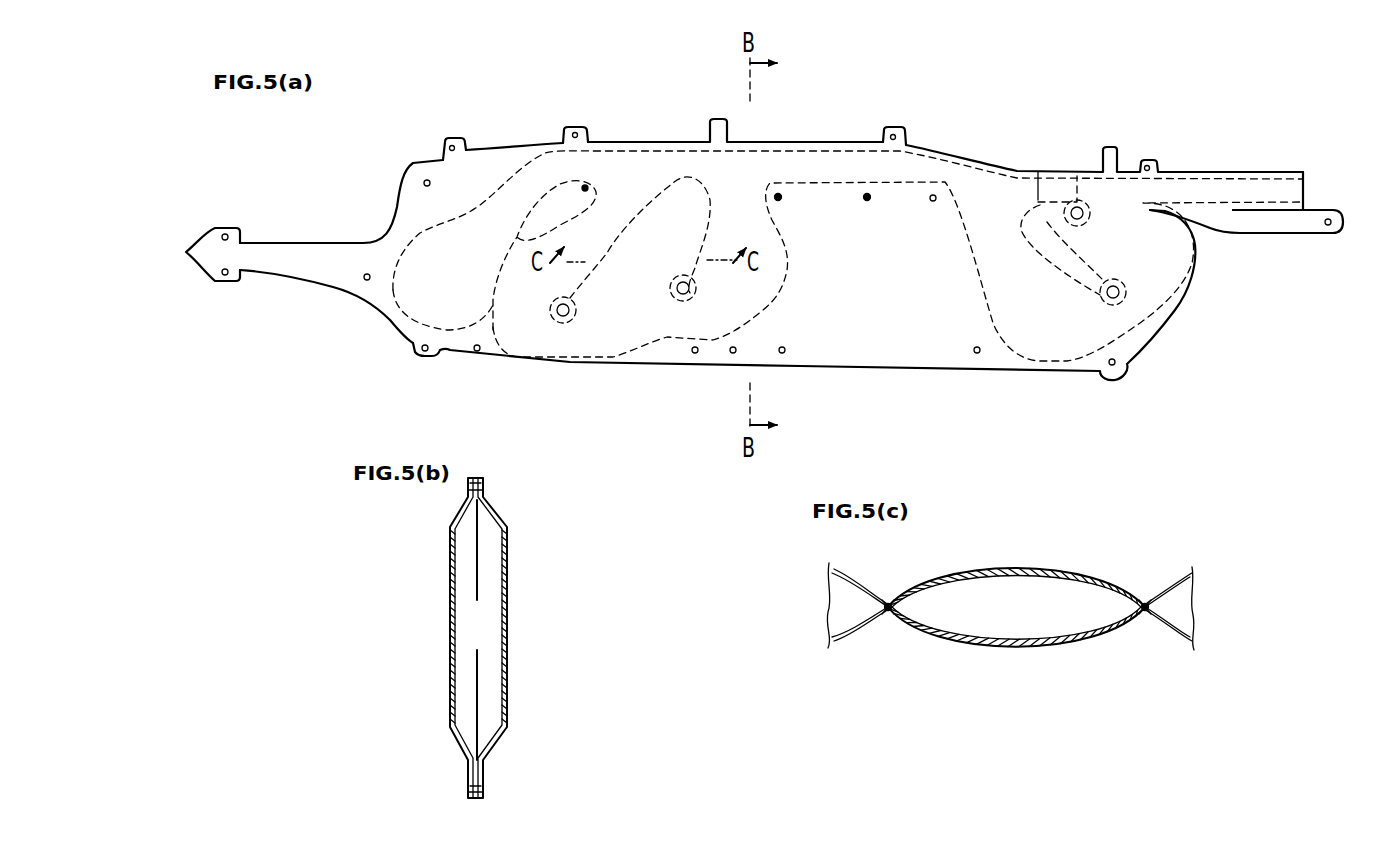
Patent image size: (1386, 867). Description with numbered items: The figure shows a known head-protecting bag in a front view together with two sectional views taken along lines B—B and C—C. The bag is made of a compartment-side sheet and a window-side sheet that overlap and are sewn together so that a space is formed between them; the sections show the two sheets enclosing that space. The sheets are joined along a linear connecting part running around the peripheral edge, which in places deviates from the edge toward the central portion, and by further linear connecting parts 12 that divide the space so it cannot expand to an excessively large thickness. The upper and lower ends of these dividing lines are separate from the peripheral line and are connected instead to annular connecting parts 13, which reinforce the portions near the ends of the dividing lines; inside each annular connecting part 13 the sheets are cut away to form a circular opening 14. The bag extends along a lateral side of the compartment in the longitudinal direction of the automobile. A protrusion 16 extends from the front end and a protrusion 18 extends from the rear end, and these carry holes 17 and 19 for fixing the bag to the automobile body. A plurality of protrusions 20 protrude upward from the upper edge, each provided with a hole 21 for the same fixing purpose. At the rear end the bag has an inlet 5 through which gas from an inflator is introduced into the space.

The inlet 5 is at (1313, 178).
The linear connecting part 12 is at (1038, 172).
The annular connecting part 13 is at (550, 312).
The circular opening 14 is at (577, 311).
The protrusion 16 is at (274, 255).
The hole 17 is at (190, 252).
The protrusion 18 is at (1295, 235).
The hole 19 is at (1330, 232).
The protrusion 20 is at (564, 131).
The hole 21 is at (448, 139).